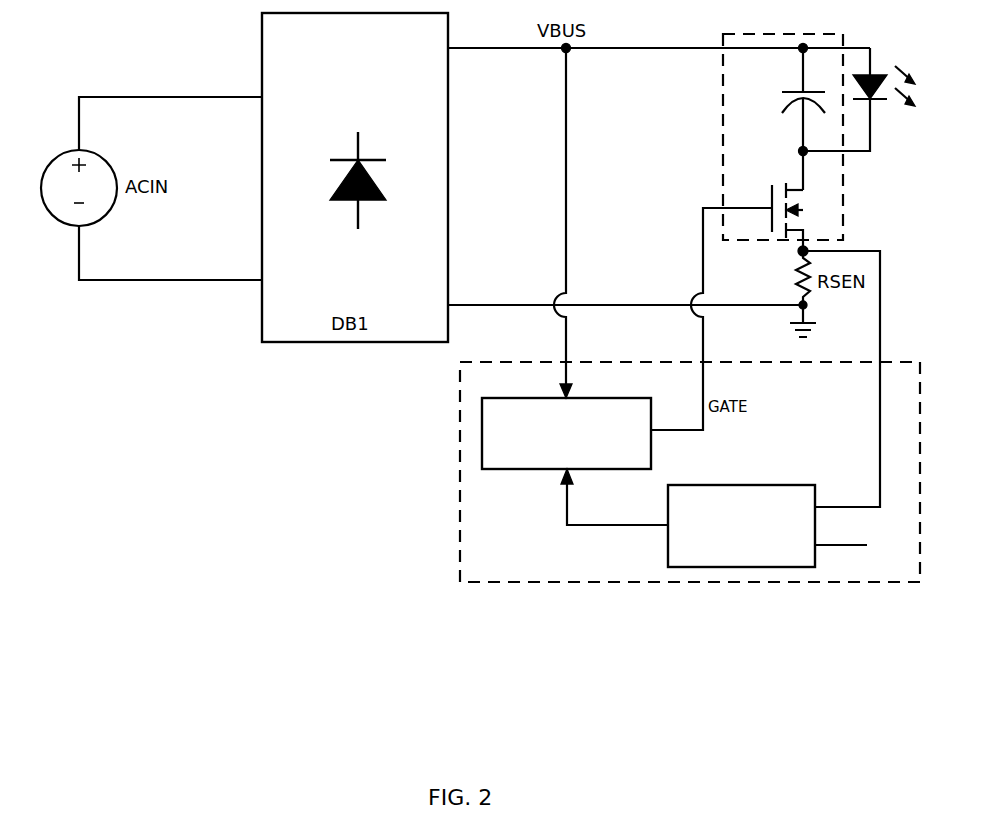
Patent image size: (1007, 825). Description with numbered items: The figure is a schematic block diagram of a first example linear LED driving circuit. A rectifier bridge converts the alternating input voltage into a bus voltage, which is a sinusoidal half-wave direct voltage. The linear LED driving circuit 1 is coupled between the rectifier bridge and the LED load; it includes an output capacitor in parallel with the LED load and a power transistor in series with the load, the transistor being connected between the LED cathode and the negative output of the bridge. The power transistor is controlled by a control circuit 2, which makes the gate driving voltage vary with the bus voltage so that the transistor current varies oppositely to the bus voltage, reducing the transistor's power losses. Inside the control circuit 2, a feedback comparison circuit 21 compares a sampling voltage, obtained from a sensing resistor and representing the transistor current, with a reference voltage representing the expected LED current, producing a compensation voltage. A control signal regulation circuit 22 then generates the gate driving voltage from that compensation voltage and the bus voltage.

The linear LED driving circuit 1 is at (737, 151).
The control circuit 2 is at (483, 573).
The feedback comparison circuit 21 is at (751, 561).
The control signal regulation circuit 22 is at (592, 398).